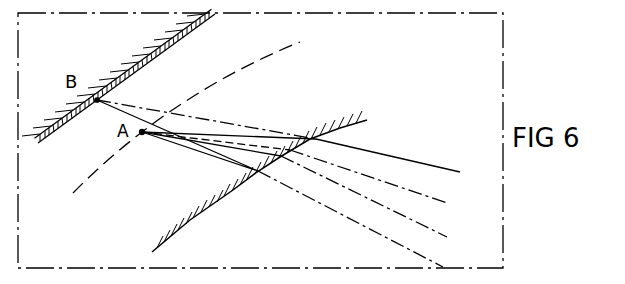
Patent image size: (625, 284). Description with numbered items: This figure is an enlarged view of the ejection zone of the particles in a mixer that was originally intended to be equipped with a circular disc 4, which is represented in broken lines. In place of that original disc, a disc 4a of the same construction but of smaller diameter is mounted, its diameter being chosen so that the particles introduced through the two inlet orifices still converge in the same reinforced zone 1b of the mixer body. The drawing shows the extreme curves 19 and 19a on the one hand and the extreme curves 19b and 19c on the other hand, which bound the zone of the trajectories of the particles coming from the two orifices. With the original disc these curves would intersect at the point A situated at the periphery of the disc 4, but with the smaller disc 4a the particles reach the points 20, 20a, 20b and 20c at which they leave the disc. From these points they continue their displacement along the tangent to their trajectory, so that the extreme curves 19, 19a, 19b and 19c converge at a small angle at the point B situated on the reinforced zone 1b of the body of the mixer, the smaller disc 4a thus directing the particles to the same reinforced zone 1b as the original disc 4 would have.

The reinforced zone 1b is at (137, 63).
The circular disc 4 is at (297, 44).
The disc 4a is at (354, 121).
The extreme curve 19 is at (432, 259).
The extreme curve 19a is at (468, 236).
The extreme curve 19b is at (447, 204).
The extreme curve 19c is at (459, 174).
The point 20 is at (257, 172).
The point 20a is at (282, 158).
The point 20b is at (283, 143).
The point 20c is at (316, 139).